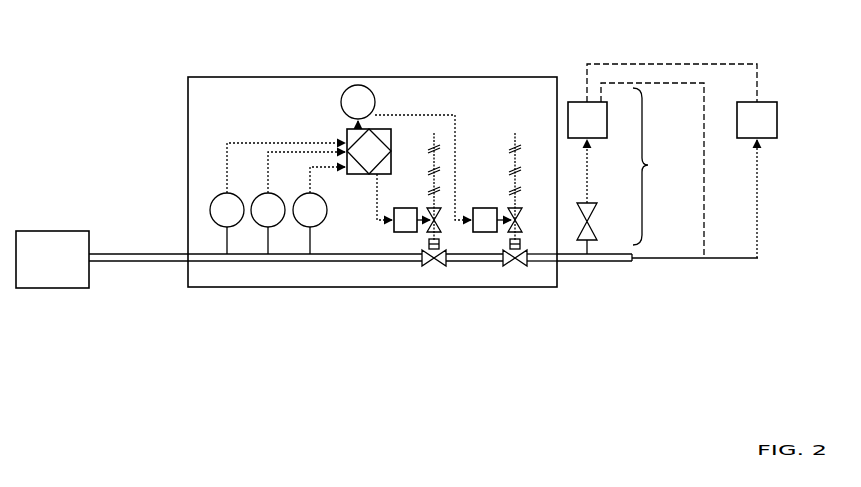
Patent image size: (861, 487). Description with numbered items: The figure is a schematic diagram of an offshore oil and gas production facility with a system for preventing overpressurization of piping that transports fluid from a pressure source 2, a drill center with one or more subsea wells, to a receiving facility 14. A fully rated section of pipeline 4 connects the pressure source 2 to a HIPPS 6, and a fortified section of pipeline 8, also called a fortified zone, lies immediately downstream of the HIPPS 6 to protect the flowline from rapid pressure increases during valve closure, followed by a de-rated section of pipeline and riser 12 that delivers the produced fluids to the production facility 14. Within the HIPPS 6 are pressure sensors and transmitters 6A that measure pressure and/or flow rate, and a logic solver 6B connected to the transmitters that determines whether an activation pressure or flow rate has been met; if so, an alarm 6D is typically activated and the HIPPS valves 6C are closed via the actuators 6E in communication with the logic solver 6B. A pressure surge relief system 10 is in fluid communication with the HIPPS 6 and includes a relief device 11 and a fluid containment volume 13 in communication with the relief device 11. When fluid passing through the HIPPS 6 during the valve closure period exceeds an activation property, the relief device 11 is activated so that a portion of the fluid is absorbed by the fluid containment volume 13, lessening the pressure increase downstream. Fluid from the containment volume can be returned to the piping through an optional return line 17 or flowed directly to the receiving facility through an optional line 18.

The pressure source 2 is at (48, 270).
The fully rated section of pipeline 4 is at (137, 259).
The HIPPS 6 is at (203, 77).
The pressure sensors and transmitters 6A is at (219, 218).
The logic solver 6B is at (347, 131).
The HIPPS valve 6C is at (426, 247).
The alarm 6D is at (350, 110).
The actuator 6E is at (411, 207).
The fortified section of pipeline 8 is at (573, 263).
The pressure surge relief system 10 is at (650, 166).
The relief device 11 is at (595, 216).
The de-rated section of pipeline and riser 12 is at (752, 260).
The fluid containment volume 13 is at (579, 128).
The receiving facility 14 is at (749, 128).
The return line 17 is at (704, 192).
The line 18 is at (670, 64).